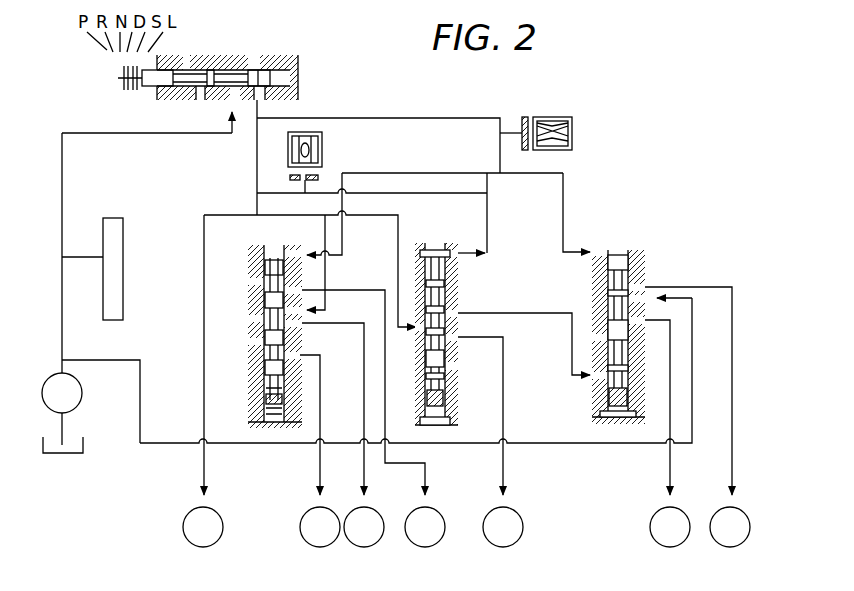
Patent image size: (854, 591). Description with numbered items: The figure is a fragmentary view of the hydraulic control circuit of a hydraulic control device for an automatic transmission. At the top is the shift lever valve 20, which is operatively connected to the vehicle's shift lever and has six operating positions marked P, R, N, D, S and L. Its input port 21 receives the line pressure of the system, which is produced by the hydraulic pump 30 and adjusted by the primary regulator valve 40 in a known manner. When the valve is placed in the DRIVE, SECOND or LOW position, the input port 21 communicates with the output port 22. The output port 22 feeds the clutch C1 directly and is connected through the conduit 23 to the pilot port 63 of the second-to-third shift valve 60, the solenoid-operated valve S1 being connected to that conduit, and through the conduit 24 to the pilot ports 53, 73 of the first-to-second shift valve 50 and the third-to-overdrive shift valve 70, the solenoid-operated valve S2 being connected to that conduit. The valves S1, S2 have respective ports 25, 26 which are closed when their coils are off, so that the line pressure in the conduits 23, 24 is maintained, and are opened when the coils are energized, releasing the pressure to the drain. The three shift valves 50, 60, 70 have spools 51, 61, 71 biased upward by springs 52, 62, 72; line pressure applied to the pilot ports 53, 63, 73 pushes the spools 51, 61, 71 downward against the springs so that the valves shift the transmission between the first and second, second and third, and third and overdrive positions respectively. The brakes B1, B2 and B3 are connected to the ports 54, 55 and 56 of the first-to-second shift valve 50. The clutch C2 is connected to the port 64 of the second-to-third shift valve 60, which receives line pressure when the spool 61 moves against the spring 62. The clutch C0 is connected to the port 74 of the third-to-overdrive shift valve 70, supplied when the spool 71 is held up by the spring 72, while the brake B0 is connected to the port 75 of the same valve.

The shift lever valve 20 is at (232, 68).
The input port 21 is at (205, 104).
The output port 22 is at (262, 104).
The conduit 23 is at (273, 193).
The conduit 24 is at (441, 118).
The port 25 is at (312, 178).
The port 26 is at (522, 130).
The solenoid-operated valve S1 is at (322, 155).
The solenoid-operated valve S2 is at (555, 117).
The hydraulic pump 30 is at (82, 392).
The primary regulator valve 40 is at (123, 285).
The 1-2 shift valve 50 is at (255, 263).
The spool 51 is at (262, 334).
The spring 52 is at (276, 400).
The pilot port 53 is at (277, 258).
The port 54 is at (302, 292).
The port 55 is at (298, 326).
The port 56 is at (292, 357).
The 2-3 shift valve 60 is at (430, 244).
The spool 61 is at (425, 365).
The spring 62 is at (445, 395).
The pilot port 63 is at (450, 248).
The port 64 is at (466, 337).
The 3-4 shift valve 70 is at (643, 248).
The spool 71 is at (590, 338).
The spring 72 is at (640, 400).
The pilot port 73 is at (598, 249).
The port 74 is at (648, 320).
The port 75 is at (645, 285).
The clutch C1 is at (203, 527).
The brake B3 is at (320, 527).
The brake B2 is at (364, 527).
The brake B1 is at (425, 527).
The clutch C2 is at (503, 527).
The clutch C0 is at (670, 527).
The brake B0 is at (730, 527).